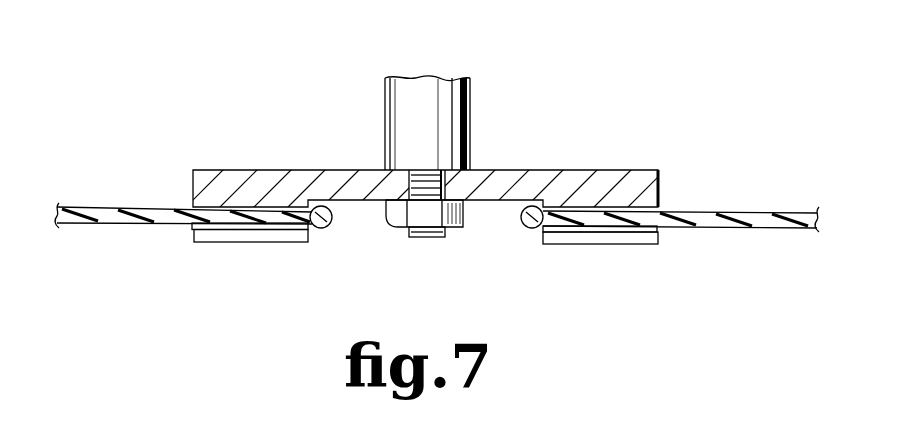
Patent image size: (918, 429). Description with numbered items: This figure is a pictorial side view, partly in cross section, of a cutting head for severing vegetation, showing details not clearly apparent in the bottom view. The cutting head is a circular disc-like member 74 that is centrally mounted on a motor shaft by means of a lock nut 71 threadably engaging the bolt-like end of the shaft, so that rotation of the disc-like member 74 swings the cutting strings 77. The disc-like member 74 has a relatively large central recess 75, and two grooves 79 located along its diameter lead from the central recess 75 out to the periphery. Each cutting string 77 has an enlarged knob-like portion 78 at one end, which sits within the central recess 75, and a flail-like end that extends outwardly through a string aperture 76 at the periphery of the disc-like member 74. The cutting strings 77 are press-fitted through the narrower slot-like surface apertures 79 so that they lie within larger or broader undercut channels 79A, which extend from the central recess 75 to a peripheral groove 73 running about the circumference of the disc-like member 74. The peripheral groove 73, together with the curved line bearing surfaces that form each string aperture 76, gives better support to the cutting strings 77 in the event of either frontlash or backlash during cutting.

The lock nut 71 is at (392, 223).
The peripheral groove 73 is at (678, 246).
The disc-like member 74 is at (282, 168).
The central recess 75 is at (455, 256).
The string aperture 76 is at (676, 202).
The cutting string 77 is at (100, 224).
The knob-like portion 78 is at (326, 229).
The groove 79 is at (250, 243).
The undercut channel 79A is at (222, 231).